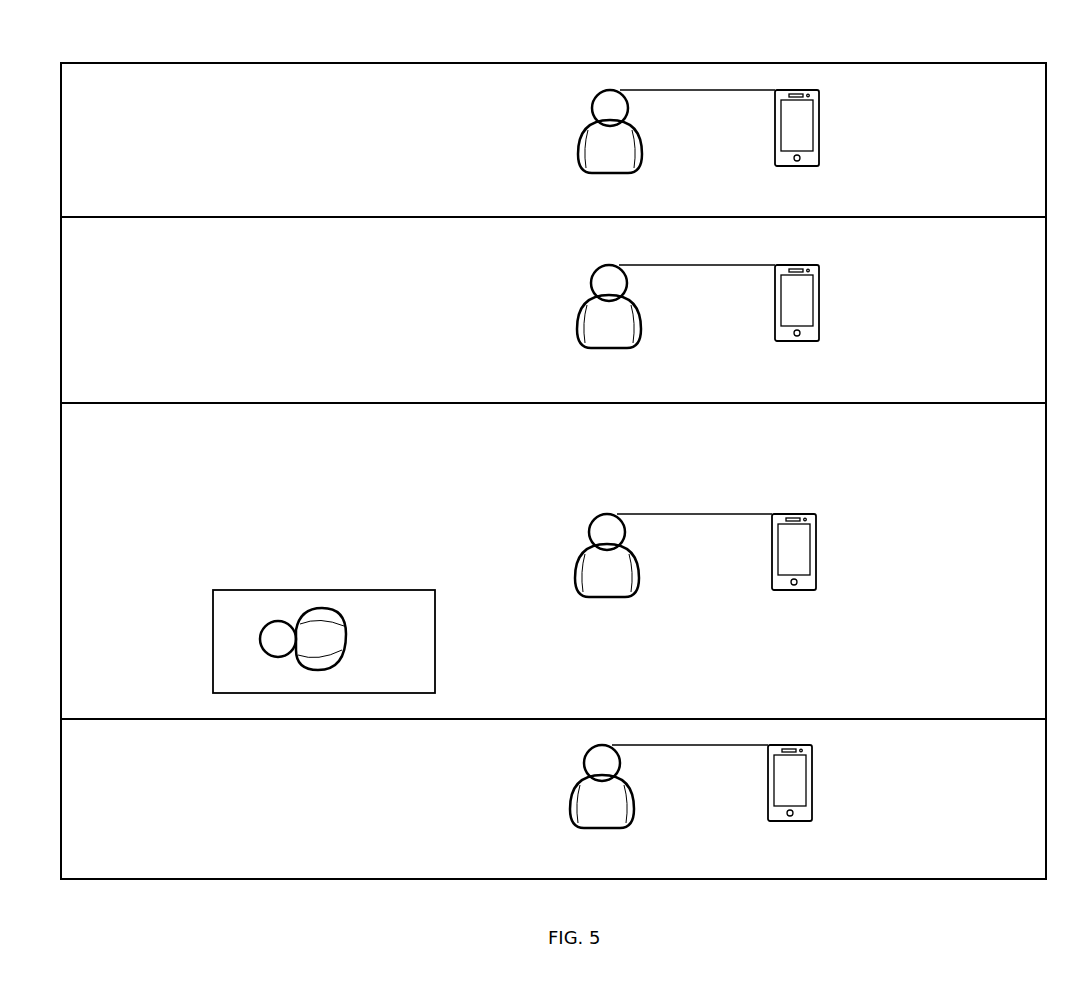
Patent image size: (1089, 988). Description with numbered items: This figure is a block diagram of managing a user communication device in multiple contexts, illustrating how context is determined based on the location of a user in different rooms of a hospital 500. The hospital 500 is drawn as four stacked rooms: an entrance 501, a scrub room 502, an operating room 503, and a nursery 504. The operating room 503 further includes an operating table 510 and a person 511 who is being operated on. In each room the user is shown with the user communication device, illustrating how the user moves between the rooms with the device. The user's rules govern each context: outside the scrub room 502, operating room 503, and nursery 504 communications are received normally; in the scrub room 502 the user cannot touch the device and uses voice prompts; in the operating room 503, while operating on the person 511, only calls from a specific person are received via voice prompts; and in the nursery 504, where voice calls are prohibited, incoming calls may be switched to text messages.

The hospital 500 is at (462, 62).
The entrance 501 is at (307, 172).
The scrub room 502 is at (335, 314).
The operating room 503 is at (408, 490).
The nursery 504 is at (278, 788).
The operating table 510 is at (278, 590).
The person 511 is at (346, 628).